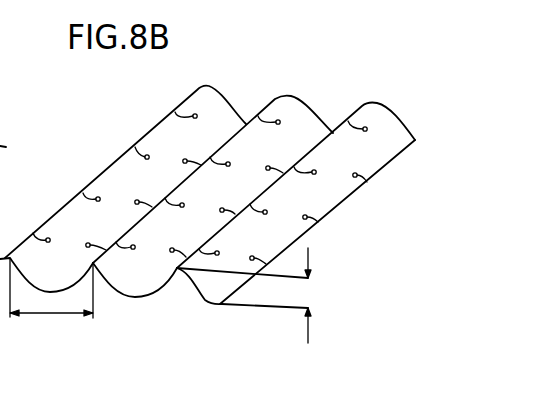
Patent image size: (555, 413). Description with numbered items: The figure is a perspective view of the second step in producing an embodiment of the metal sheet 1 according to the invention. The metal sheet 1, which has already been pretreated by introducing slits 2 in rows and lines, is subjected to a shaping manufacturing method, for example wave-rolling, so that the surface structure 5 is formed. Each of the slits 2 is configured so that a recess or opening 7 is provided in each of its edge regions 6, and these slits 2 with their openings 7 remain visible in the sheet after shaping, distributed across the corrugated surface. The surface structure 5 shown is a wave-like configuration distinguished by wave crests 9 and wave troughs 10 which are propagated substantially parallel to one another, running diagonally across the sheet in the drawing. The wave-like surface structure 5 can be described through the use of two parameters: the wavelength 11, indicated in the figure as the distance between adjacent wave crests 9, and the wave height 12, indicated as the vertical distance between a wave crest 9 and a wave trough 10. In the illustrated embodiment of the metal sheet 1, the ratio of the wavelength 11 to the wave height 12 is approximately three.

The metal sheet 1 is at (330, 202).
The slits 2 is at (137, 148).
The surface structure 5 is at (312, 95).
The edge regions 6 is at (203, 107).
The recess or opening 7 is at (101, 197).
The wave crests 9 is at (177, 270).
The wave troughs 10 is at (129, 297).
The wavelength 11 is at (48, 315).
The wave height 12 is at (308, 295).